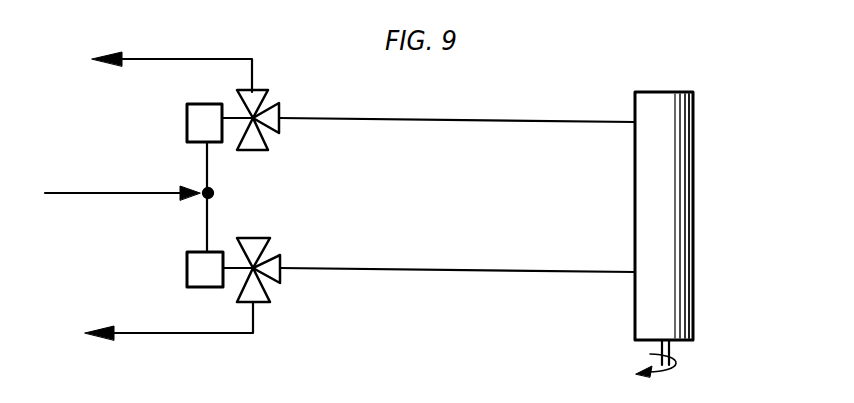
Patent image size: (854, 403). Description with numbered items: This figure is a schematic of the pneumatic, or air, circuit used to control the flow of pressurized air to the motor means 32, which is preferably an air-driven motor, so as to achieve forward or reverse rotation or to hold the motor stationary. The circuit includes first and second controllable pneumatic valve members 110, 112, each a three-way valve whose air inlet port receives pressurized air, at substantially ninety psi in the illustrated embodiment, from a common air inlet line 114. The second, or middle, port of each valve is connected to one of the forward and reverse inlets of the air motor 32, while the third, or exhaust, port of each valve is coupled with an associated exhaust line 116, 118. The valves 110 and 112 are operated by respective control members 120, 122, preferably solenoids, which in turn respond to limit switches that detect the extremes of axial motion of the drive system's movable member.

The motor means 32 is at (675, 157).
The first controllable pneumatic valve member 110 is at (279, 127).
The second controllable pneumatic valve member 112 is at (267, 238).
The air inlet line 114 is at (90, 193).
The exhaust line 116 is at (150, 58).
The exhaust line 118 is at (150, 334).
The control member 120 is at (187, 118).
The control member 122 is at (187, 263).